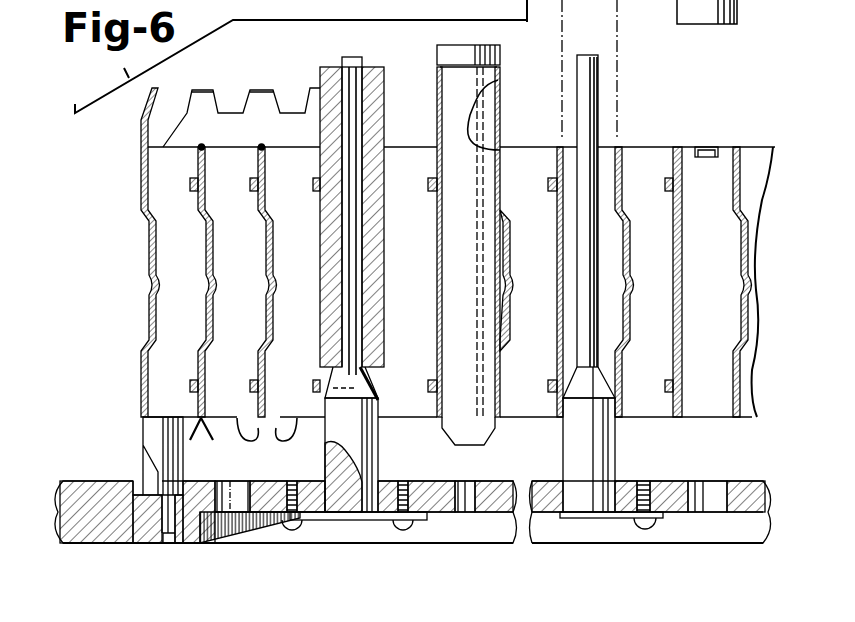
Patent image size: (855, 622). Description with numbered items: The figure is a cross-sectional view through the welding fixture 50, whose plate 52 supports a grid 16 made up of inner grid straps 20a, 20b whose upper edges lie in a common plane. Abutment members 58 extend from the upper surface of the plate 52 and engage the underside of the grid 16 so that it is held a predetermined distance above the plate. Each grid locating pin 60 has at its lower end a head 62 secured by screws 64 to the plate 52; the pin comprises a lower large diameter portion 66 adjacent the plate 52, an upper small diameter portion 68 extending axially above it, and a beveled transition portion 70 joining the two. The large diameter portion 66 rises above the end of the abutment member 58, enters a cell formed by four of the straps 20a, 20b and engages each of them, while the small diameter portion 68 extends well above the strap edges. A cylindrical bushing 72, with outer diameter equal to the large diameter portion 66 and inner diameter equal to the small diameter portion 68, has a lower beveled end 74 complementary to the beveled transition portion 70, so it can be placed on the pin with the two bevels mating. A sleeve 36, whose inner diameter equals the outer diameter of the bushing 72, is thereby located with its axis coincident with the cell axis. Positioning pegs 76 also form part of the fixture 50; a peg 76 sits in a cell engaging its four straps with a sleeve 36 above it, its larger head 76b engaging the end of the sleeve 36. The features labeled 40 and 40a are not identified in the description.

The grid 16 is at (767, 316).
The inner grid strap 20a is at (723, 152).
The inner grid strap 20b is at (322, 207).
The sleeve 36 is at (409, 227).
The tab 40 is at (710, 147).
The locating tabs 40a is at (438, 152).
The welding fixture 50 is at (642, 558).
The plate 52 is at (748, 480).
The abutment member 58 is at (163, 435).
The grid locating pin 60 is at (296, 456).
The head 62 is at (310, 520).
The screw 64 is at (410, 520).
The large diameter portion 66 is at (378, 462).
The small diameter portion 68 is at (353, 338).
The beveled transition portion 70 is at (368, 377).
The cylindrical bushing 72 is at (335, 309).
The beveled end 74 is at (345, 377).
The positioning peg 76 is at (468, 222).
The head 76b is at (500, 57).